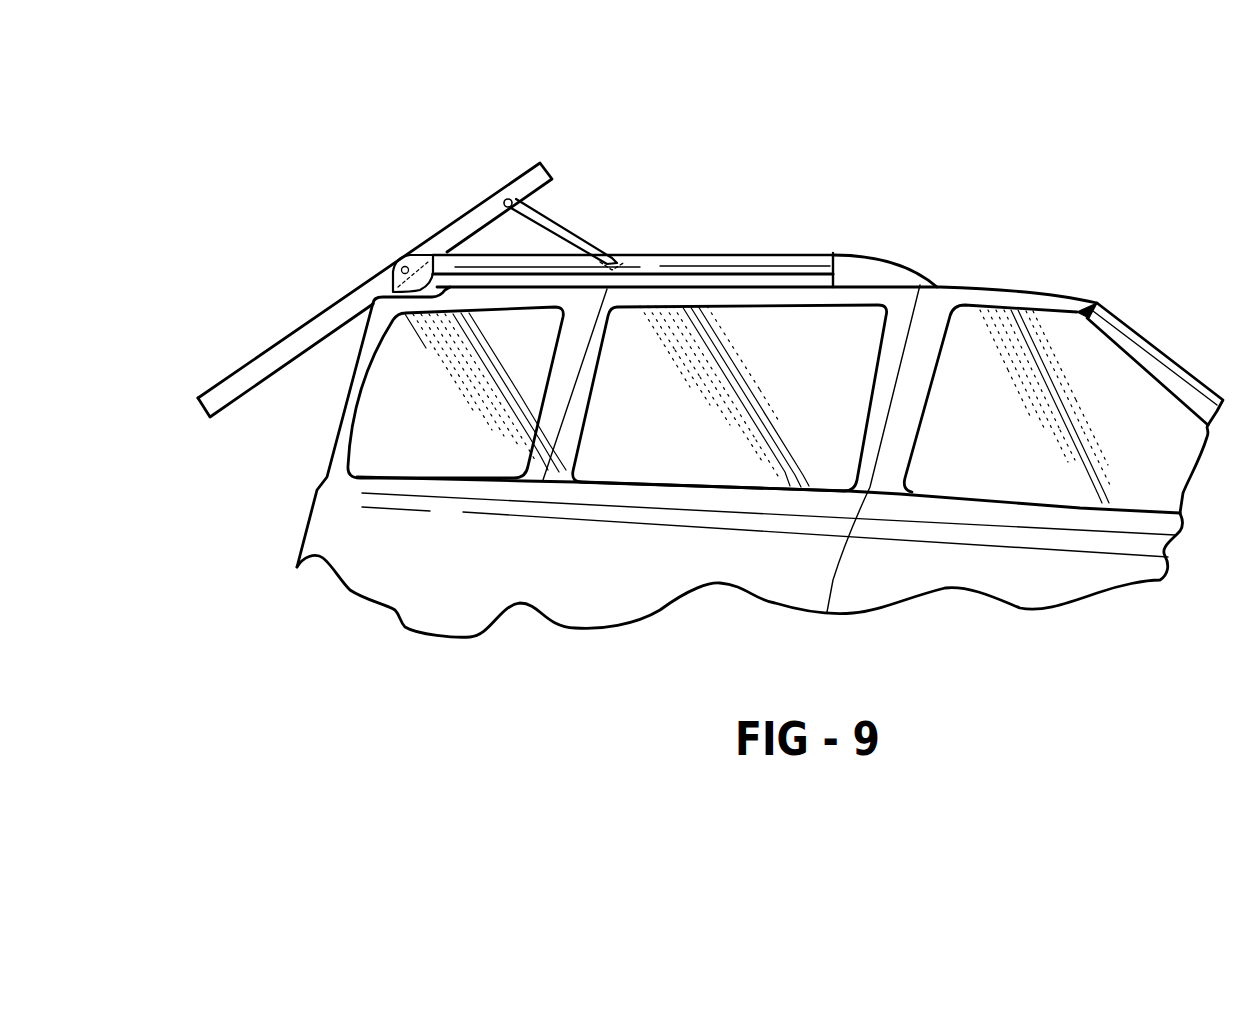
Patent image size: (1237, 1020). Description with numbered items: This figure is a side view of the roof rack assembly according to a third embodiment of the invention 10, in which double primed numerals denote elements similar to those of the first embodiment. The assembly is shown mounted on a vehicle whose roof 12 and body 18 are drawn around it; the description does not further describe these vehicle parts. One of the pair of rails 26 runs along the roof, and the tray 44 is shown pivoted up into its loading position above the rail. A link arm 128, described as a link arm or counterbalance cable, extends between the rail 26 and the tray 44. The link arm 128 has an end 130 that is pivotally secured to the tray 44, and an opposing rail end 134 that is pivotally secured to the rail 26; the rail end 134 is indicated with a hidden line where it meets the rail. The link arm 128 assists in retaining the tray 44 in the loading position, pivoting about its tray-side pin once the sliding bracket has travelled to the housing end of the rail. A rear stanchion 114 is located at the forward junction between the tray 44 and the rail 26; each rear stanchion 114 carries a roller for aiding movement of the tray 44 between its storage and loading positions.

The roof rack assembly 10 is at (339, 201).
The vehicle roof 12 is at (1000, 287).
The vehicle body 18 is at (330, 470).
The rail 26 is at (714, 255).
The tray 44 is at (467, 213).
The rear stanchion 114 is at (387, 269).
The link arm 128 is at (569, 232).
The end 130 is at (512, 197).
The rail end 134 is at (617, 262).